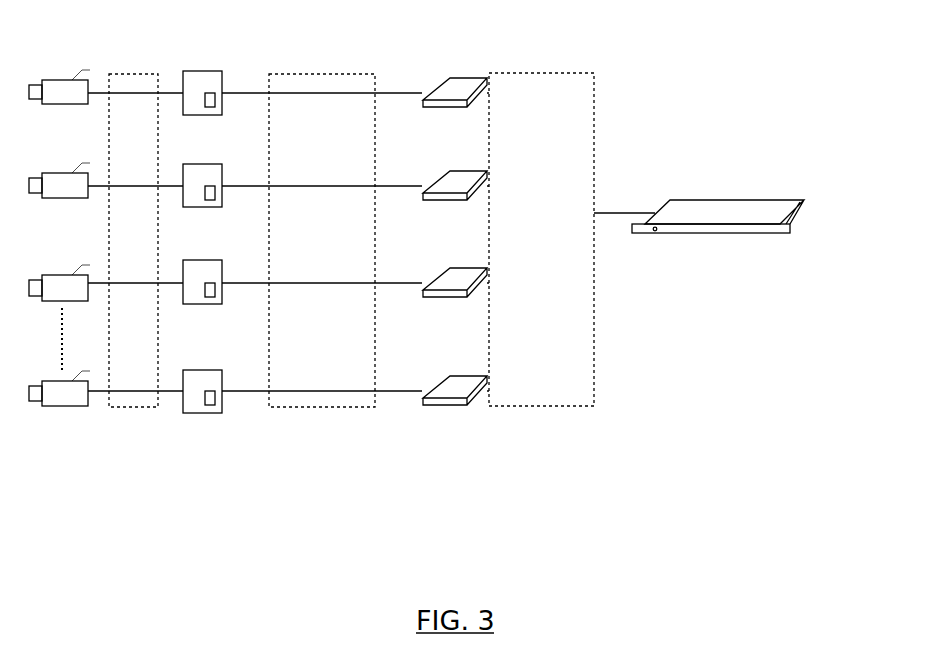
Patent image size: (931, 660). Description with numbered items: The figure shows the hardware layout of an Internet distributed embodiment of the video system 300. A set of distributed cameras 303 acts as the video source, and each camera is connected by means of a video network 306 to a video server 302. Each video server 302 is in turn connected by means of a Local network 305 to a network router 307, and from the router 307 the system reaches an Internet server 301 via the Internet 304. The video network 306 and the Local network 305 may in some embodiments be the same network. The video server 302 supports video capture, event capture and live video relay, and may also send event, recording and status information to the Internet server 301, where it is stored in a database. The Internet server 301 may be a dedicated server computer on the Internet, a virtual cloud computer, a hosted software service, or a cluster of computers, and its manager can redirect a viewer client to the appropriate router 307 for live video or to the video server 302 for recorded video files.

The video surveillance system 300 is at (722, 75).
The Internet server 301 is at (722, 200).
The video server 302 is at (223, 72).
The distributed cameras 303 is at (45, 80).
The Internet 304 is at (595, 170).
The Local network 305 is at (338, 73).
The video network 306 is at (120, 92).
The network router 307 is at (460, 78).